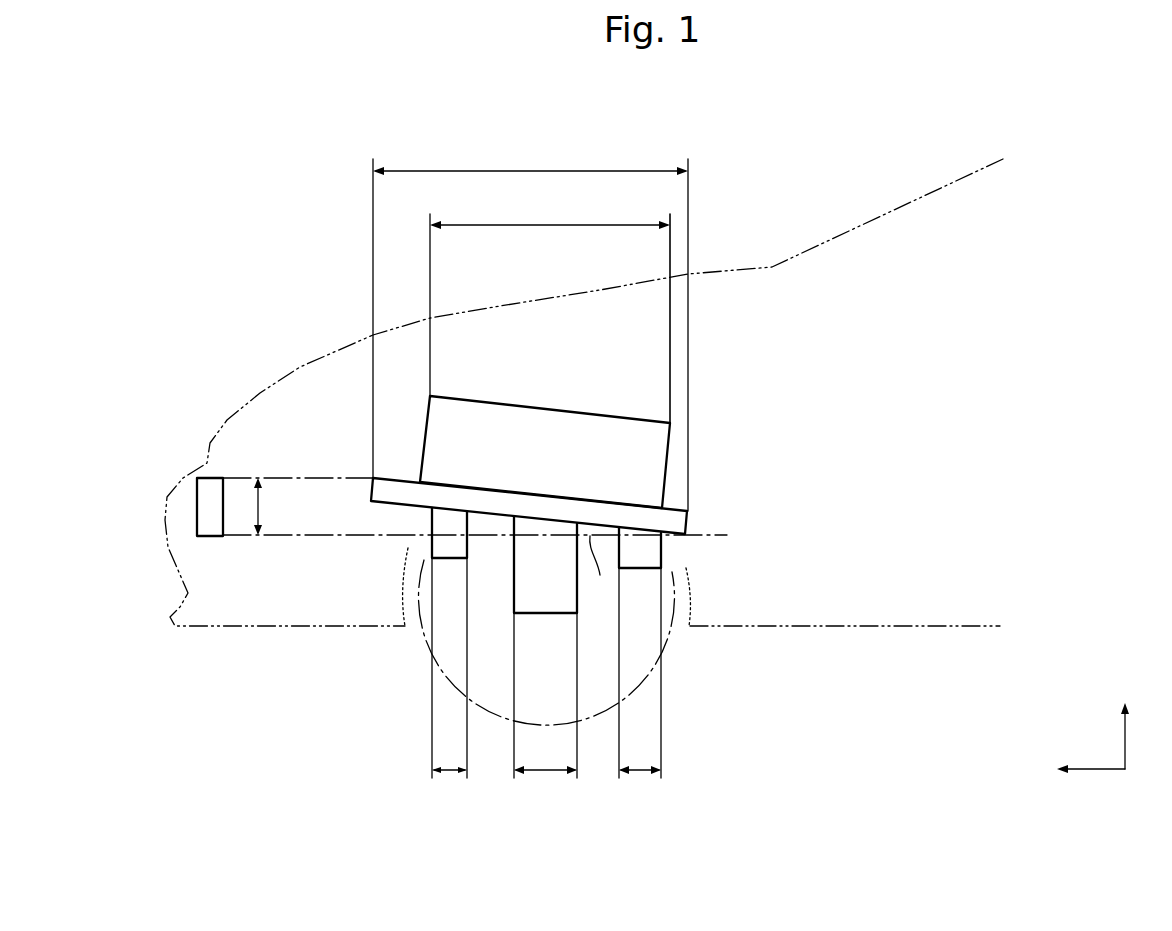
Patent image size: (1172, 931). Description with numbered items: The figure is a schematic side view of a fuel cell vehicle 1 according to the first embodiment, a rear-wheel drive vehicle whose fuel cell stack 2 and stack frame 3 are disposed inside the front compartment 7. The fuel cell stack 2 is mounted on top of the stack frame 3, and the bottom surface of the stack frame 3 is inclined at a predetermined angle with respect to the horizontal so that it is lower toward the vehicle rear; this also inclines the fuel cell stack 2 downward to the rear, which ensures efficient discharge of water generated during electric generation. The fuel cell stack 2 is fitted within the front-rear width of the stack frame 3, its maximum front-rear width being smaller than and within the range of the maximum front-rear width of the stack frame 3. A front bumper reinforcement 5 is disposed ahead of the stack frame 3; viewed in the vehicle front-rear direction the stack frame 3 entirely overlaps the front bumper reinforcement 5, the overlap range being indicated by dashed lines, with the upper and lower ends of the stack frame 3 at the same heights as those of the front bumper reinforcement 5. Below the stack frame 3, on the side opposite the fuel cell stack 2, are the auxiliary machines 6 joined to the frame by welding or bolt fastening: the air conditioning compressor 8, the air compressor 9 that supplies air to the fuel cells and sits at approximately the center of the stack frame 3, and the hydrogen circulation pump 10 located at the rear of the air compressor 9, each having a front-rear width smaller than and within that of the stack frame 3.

The fuel cell vehicle 1 is at (318, 272).
The fuel cell stack 2 is at (548, 432).
The stack frame 3 is at (398, 490).
The front bumper reinforcement 5 is at (208, 533).
The auxiliary machines 6 is at (551, 591).
The front compartment 7 is at (308, 425).
The air conditioning compressor 8 is at (437, 547).
The air compressor 9 is at (527, 595).
The hydrogen circulation pump 10 is at (648, 548).